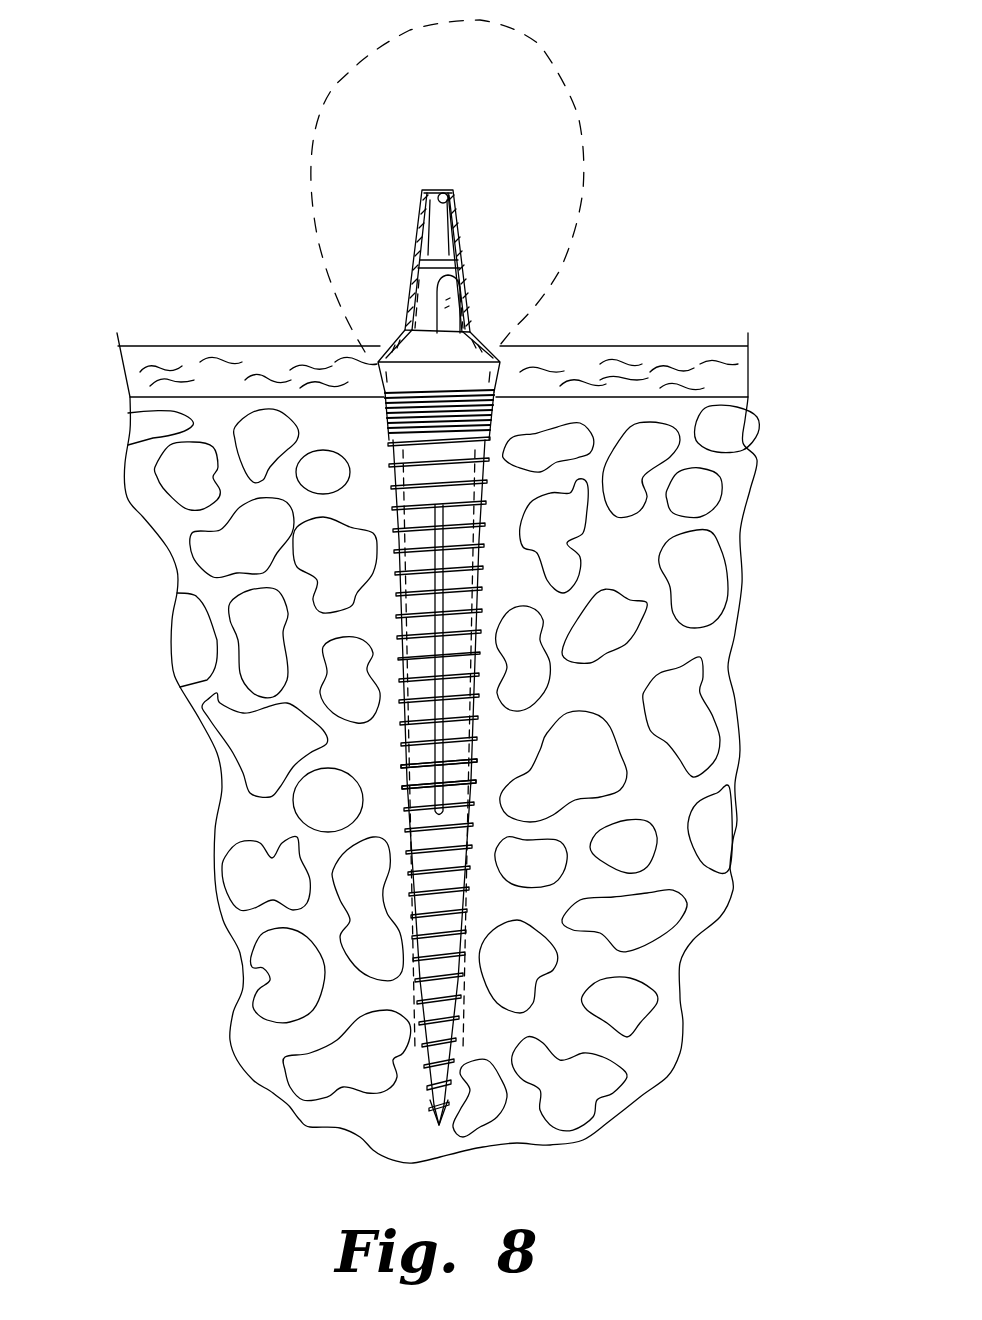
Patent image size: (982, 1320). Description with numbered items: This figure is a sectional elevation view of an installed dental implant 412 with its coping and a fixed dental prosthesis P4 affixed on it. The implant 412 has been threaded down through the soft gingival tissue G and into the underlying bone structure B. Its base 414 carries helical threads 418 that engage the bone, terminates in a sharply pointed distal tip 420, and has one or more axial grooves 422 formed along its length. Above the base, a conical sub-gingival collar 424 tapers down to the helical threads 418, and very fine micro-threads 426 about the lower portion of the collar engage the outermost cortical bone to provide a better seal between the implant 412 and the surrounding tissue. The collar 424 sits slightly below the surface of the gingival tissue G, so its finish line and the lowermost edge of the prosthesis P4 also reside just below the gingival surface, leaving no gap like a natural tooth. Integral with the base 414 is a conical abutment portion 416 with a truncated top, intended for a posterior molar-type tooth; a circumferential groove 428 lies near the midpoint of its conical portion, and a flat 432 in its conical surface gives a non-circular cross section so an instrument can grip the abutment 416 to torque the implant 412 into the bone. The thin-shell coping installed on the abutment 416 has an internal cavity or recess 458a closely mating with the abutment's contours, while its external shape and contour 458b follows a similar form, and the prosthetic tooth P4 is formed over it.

The dental prosthesis P4 is at (385, 60).
The gingival tissue G is at (128, 376).
The bone structure B is at (193, 578).
The implant 412 is at (402, 665).
The base 414 is at (480, 683).
The abutment portion 416 is at (452, 230).
The helical threads 418 is at (473, 757).
The distal tip 420 is at (440, 1110).
The axial grooves 422 is at (392, 592).
The sub-gingival collar 424 is at (362, 360).
The micro-threads 426 is at (493, 410).
The circumferential groove 428 is at (423, 260).
The flat 432 is at (450, 320).
The internal cavity or recess 458a is at (448, 193).
The external shape and contour 458b is at (462, 232).